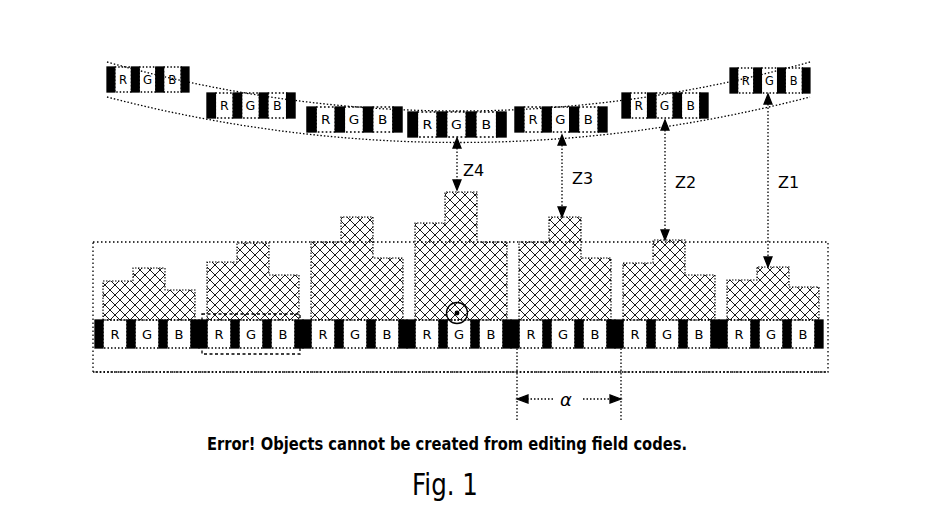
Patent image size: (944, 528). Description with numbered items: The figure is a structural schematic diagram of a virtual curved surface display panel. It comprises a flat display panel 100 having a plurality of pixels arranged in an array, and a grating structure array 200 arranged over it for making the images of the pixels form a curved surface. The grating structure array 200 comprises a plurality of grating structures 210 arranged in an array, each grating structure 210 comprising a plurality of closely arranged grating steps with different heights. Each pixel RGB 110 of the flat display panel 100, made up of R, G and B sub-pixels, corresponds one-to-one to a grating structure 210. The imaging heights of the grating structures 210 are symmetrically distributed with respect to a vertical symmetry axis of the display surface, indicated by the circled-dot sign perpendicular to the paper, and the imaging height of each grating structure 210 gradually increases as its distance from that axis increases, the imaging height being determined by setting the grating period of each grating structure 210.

The flat display panel 100 is at (828, 322).
The pixel RGB 110 is at (242, 354).
The grating structure array 200 is at (93, 285).
The grating structure 210 is at (377, 337).